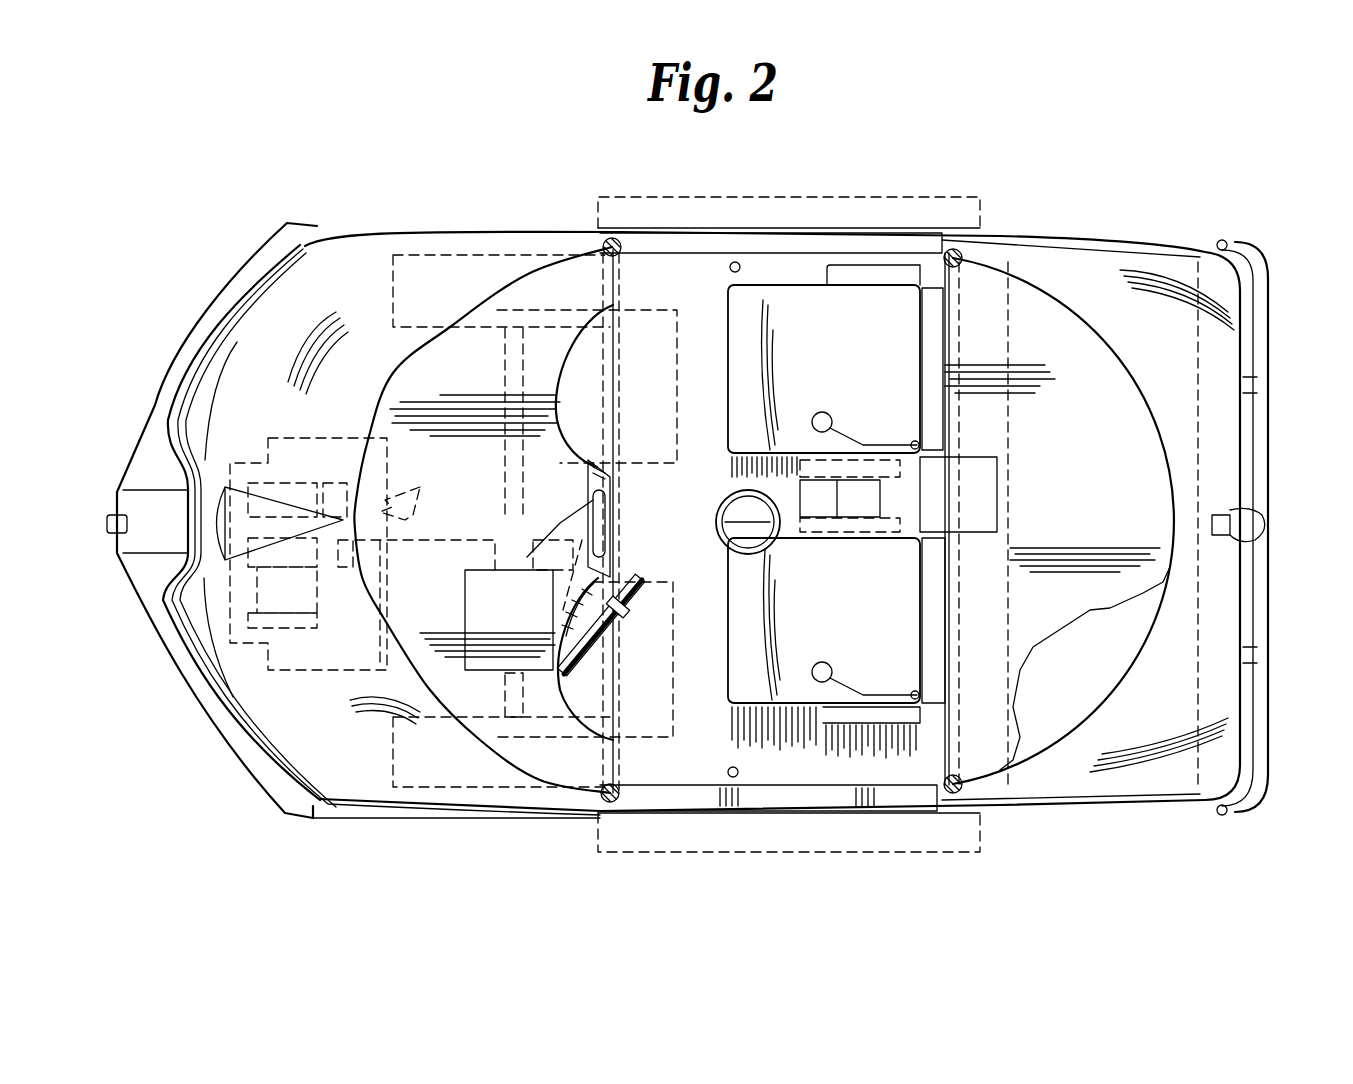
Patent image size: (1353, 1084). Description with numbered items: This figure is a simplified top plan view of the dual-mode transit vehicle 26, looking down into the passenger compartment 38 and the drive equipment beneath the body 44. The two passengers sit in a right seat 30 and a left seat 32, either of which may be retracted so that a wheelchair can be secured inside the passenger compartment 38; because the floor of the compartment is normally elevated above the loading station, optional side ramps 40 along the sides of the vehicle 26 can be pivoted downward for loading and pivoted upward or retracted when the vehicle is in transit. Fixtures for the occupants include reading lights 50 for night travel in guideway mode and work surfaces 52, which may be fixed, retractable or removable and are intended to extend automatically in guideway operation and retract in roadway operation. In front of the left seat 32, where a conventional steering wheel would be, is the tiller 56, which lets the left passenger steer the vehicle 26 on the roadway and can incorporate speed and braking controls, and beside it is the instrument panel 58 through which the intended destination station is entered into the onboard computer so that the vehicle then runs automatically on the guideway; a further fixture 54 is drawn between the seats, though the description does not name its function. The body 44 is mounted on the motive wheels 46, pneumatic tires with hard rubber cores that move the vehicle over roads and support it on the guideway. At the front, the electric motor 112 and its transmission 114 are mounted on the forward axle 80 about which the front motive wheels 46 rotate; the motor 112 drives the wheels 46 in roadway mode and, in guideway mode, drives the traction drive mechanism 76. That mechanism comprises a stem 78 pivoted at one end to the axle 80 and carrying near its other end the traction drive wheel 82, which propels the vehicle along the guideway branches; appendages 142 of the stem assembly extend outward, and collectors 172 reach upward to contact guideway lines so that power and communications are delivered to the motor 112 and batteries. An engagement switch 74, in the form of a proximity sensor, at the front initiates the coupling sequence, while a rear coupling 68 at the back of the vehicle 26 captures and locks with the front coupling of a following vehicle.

The vehicle 26 is at (400, 222).
The right seat 30 is at (876, 360).
The left seat 32 is at (871, 620).
The passenger compartment 38 is at (648, 290).
The side ramps 40 is at (885, 200).
The body 44 is at (390, 817).
The wheels 46 is at (462, 257).
The reading lights 50 is at (822, 411).
The work surfaces 52 is at (677, 463).
The drain port 54 is at (720, 540).
The tiller 56 is at (643, 597).
The instrument panel 58 is at (612, 530).
The rear coupling 68 is at (1262, 527).
The engagement switch 74 is at (108, 520).
The traction drive mechanism 76 is at (300, 420).
The stem 78 is at (445, 505).
The axle 80 is at (523, 357).
The traction drive wheel 82 is at (380, 610).
The electric motor 112 is at (463, 587).
The transmission 114 is at (603, 492).
The appendages 142 is at (260, 433).
The collectors 172 is at (400, 497).